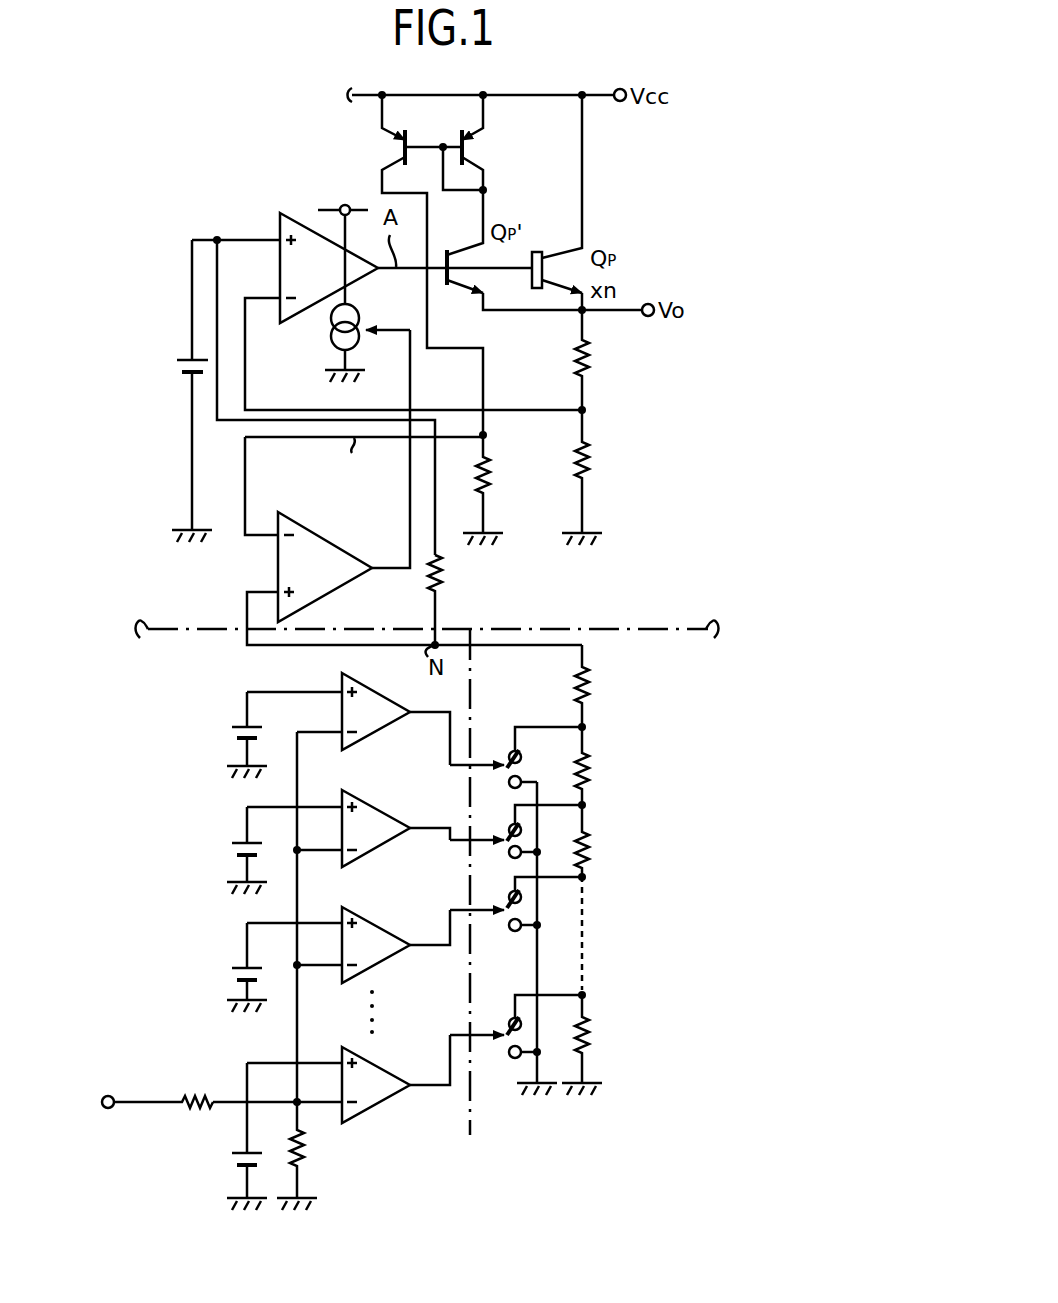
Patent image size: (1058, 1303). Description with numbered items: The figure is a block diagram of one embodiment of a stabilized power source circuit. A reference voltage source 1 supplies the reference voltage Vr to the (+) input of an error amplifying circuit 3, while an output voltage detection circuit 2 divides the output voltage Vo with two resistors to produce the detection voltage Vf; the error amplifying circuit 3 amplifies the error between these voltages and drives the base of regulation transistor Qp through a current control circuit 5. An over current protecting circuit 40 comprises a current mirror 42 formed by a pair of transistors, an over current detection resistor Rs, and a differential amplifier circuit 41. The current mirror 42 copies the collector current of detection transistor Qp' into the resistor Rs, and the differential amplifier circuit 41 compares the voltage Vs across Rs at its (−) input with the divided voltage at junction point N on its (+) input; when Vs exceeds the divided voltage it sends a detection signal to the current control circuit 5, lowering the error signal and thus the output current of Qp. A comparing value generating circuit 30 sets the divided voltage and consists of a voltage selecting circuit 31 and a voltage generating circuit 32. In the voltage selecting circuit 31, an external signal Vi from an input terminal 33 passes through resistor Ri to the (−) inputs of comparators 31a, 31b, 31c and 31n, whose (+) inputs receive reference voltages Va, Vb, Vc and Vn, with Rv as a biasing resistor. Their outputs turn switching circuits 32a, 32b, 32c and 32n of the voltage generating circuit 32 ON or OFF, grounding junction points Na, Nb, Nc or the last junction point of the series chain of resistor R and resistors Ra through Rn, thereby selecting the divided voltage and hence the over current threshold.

The reference voltage source 1 is at (178, 373).
The output voltage detection circuit 2 is at (566, 438).
The error amplifying circuit 3 is at (300, 216).
The current control circuit 5 is at (331, 345).
The comparing value generating circuit 30 is at (502, 693).
The voltage selecting circuit 31 is at (210, 874).
The comparator 31a is at (385, 698).
The comparator 31b is at (388, 815).
The comparator 31c is at (391, 932).
The comparator 31n is at (403, 1078).
The voltage generating circuit 32 is at (640, 833).
The switching circuit 32a is at (513, 770).
The switching circuit 32b is at (513, 845).
The switching circuit 32c is at (513, 912).
The switching circuit 32n is at (508, 1040).
The input terminal 33 is at (103, 1110).
The over current protecting circuit 40 is at (470, 572).
The differential amplifier circuit 41 is at (348, 556).
The current mirror 42 is at (480, 147).